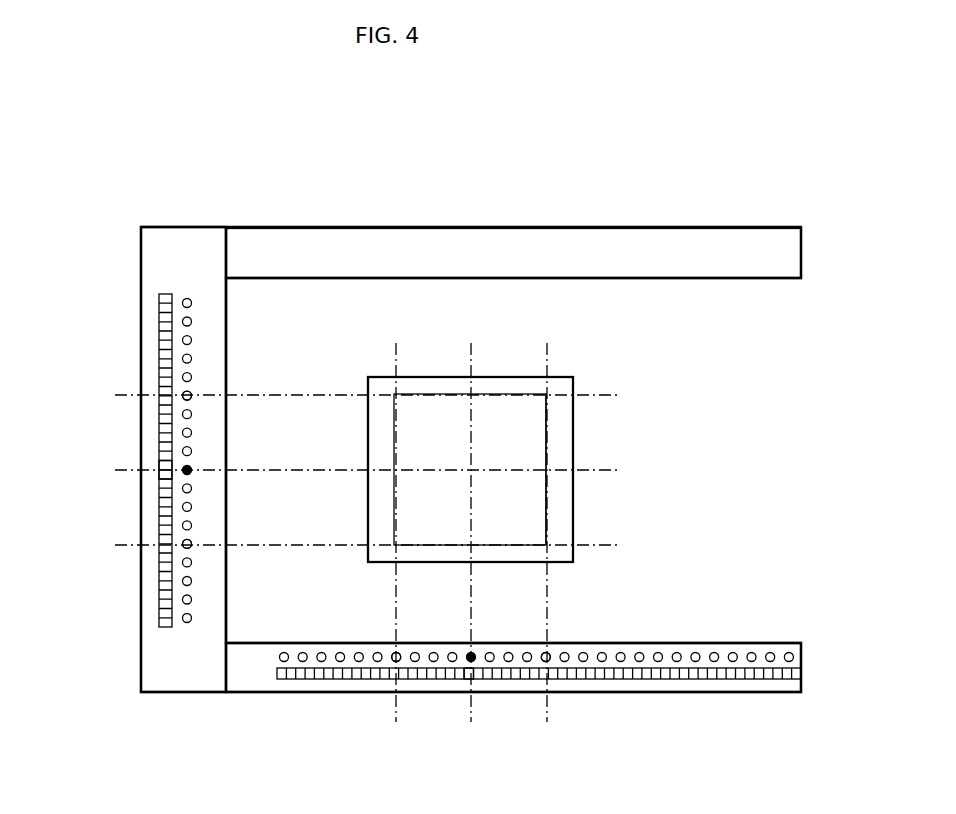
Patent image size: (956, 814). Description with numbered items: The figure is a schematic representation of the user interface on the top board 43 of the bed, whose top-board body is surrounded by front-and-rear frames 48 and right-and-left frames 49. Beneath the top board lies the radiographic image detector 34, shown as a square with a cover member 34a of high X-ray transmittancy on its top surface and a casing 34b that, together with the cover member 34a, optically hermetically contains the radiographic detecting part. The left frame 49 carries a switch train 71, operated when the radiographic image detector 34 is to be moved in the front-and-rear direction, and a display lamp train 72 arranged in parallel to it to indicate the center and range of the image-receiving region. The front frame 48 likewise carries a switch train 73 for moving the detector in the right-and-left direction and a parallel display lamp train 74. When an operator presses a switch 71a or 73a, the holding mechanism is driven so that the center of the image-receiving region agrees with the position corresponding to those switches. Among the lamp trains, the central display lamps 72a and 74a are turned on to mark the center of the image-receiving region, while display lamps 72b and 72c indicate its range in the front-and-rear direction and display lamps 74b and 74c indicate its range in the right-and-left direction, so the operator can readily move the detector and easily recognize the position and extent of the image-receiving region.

The top board 43 is at (142, 222).
The front-and-rear frames 48 is at (722, 250).
The right-and-left frames 49 is at (175, 694).
The radiographic image detector 34 is at (452, 376).
The cover member 34a is at (488, 412).
The casing 34b is at (554, 378).
The switch train 71 is at (160, 350).
The switch 71a is at (165, 475).
The display lamp train 72 is at (182, 320).
The display lamp 72a is at (183, 470).
The display lamp 72b is at (183, 393).
The display lamp 72c is at (184, 548).
The switch train 73 is at (307, 680).
The switch 73a is at (469, 680).
The display lamp train 74 is at (280, 660).
The display lamp 74a is at (474, 661).
The display lamp 74b is at (394, 661).
The display lamp 74c is at (549, 661).